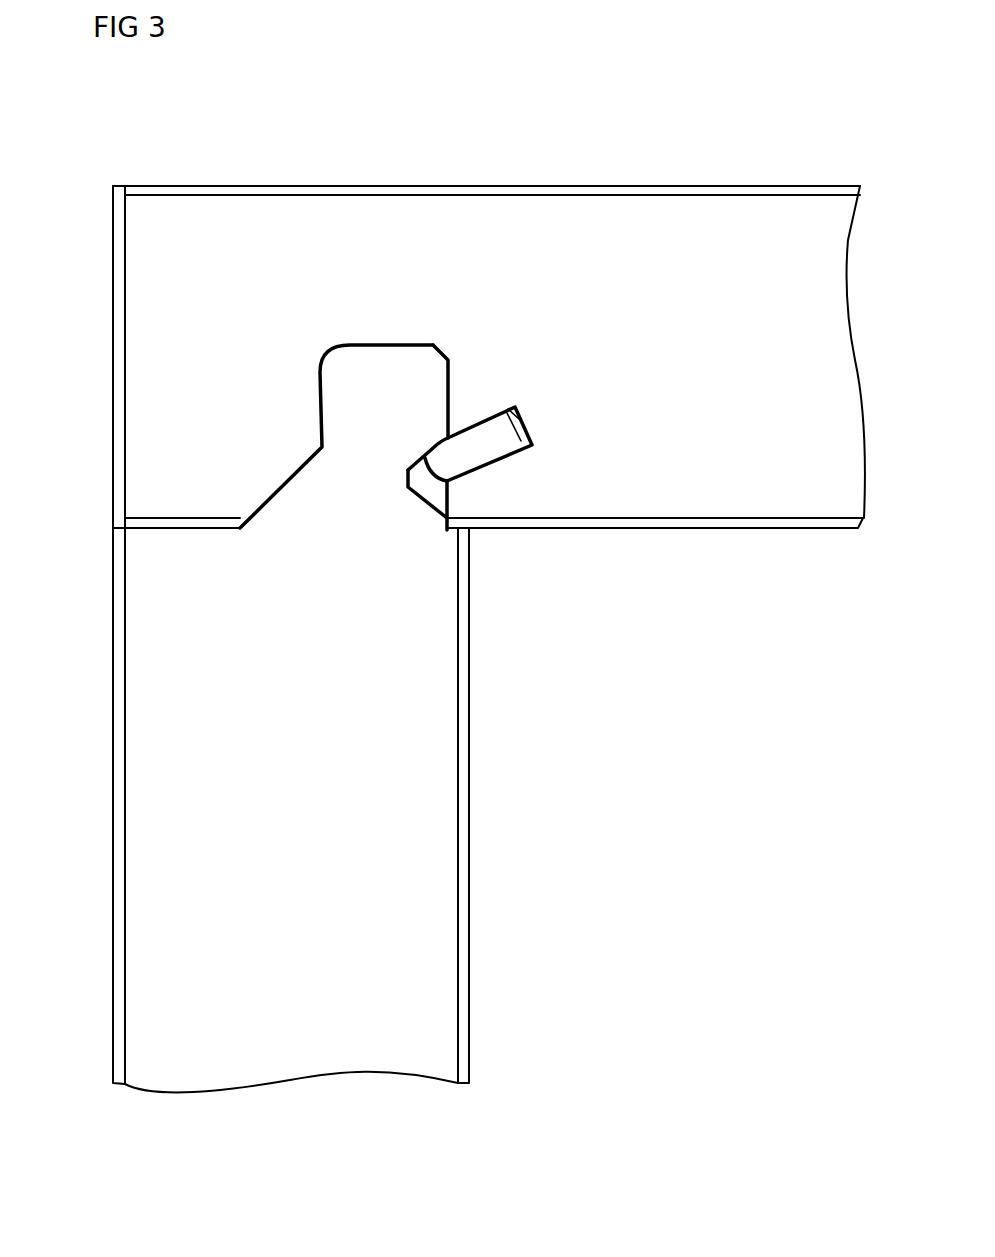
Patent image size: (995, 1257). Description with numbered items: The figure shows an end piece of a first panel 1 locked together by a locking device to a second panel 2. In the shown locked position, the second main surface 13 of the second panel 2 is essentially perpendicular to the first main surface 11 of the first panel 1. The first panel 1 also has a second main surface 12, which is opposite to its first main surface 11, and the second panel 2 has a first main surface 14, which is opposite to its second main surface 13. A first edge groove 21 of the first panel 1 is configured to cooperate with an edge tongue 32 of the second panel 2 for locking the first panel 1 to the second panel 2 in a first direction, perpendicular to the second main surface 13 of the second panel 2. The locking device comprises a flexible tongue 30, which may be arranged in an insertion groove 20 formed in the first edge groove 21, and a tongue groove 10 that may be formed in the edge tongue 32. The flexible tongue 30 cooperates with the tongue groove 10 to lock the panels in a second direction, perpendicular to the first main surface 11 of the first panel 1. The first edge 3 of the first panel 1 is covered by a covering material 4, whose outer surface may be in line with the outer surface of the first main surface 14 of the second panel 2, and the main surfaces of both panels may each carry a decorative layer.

The first panel 1 is at (725, 208).
The second panel 2 is at (400, 998).
The first edge 3 is at (127, 312).
The covering material 4 is at (113, 267).
The tongue groove 10 is at (432, 487).
The first main surface 11 is at (665, 530).
The second main surface 12 is at (530, 184).
The second main surface 13 is at (460, 742).
The first main surface 14 is at (113, 738).
The insertion groove 20 is at (522, 438).
The first edge groove 21 is at (443, 350).
The flexible tongue 30 is at (460, 462).
The edge tongue 32 is at (343, 390).